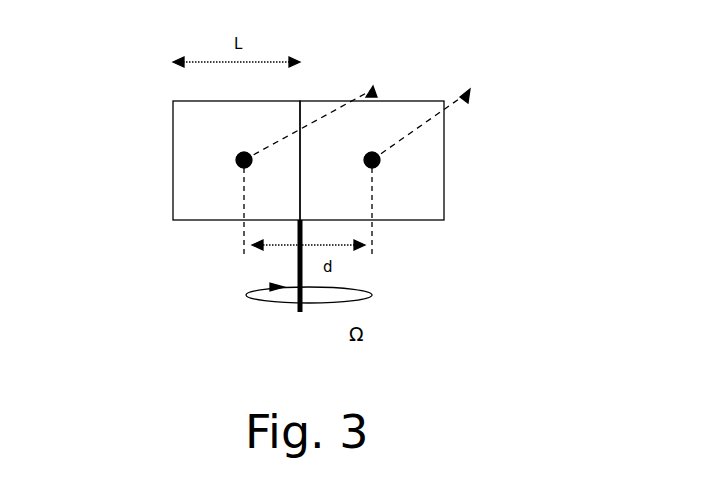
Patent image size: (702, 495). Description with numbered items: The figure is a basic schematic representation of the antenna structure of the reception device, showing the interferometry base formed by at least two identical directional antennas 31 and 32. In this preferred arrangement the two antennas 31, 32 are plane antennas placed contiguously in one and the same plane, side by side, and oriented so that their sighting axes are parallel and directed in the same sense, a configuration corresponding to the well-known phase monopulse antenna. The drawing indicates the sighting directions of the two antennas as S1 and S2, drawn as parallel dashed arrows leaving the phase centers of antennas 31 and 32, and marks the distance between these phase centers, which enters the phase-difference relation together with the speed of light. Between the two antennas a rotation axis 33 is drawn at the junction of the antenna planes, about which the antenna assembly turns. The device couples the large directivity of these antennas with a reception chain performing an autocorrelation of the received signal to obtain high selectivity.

The directional antenna 31 is at (190, 216).
The directional antenna 32 is at (430, 203).
The axis of rotation 33 is at (290, 303).
The first sensor direction S1 is at (320, 107).
The second sensor direction S2 is at (441, 115).